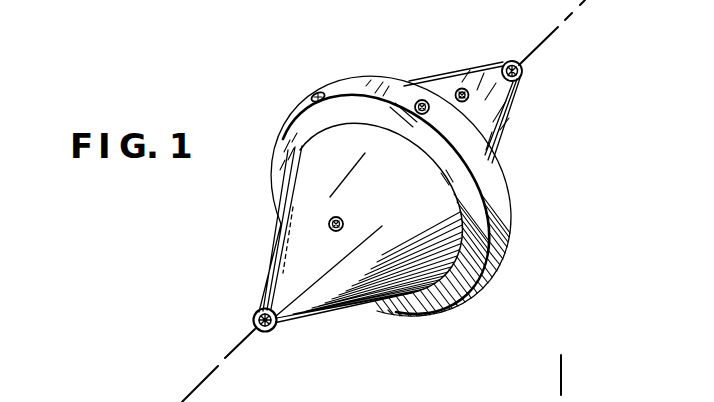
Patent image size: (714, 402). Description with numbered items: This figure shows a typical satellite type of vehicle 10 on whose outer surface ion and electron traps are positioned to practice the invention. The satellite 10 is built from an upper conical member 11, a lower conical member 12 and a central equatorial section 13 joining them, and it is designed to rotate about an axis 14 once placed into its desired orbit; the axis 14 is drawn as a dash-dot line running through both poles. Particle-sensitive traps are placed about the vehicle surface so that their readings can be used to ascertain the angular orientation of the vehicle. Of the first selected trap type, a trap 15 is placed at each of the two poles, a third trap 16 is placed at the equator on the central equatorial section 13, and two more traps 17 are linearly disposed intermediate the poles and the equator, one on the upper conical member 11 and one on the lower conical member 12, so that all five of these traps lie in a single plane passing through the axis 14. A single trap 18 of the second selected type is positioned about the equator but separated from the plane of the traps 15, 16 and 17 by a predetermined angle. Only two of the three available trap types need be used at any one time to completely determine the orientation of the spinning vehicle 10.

The satellite type of vehicle 10 is at (404, 53).
The upper conical member 11 is at (496, 106).
The lower conical member 12 is at (386, 198).
The central equatorial section 13 is at (478, 160).
The axis 14 is at (557, 26).
The trap 15 is at (523, 72).
The third trap 16 is at (428, 112).
The traps 17 is at (460, 89).
The single trap 18 is at (315, 94).